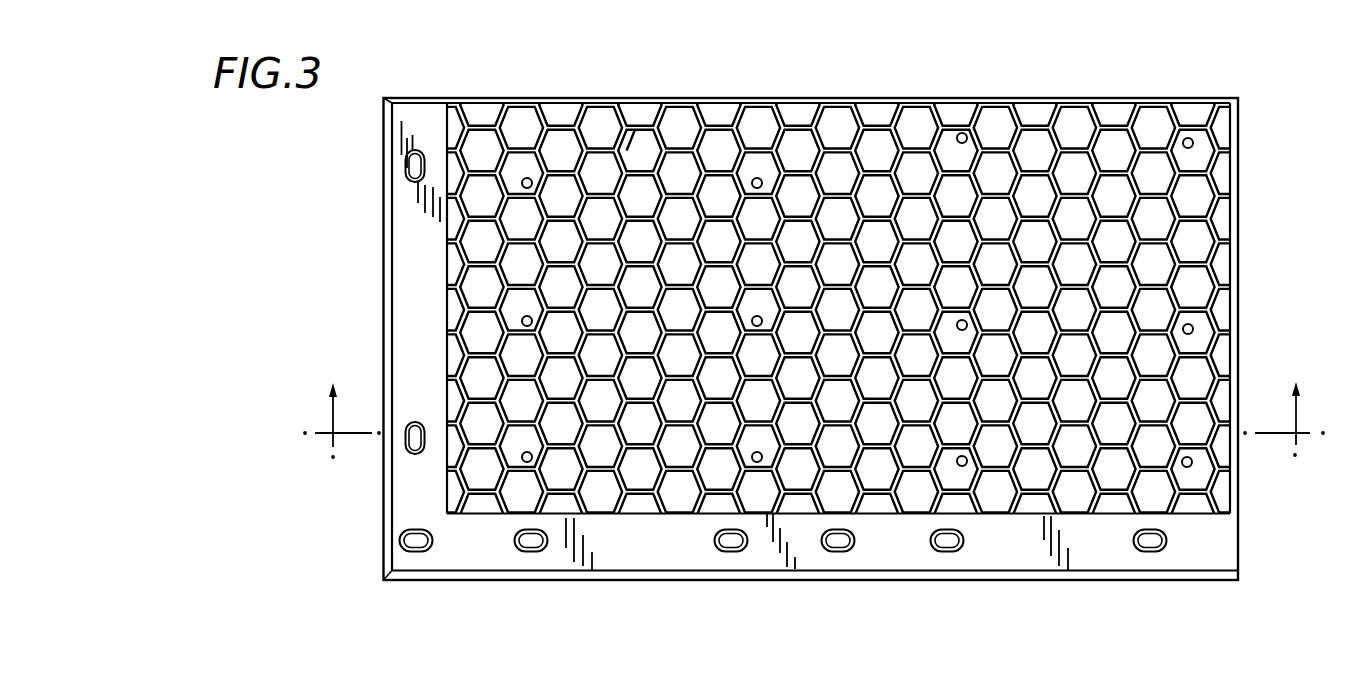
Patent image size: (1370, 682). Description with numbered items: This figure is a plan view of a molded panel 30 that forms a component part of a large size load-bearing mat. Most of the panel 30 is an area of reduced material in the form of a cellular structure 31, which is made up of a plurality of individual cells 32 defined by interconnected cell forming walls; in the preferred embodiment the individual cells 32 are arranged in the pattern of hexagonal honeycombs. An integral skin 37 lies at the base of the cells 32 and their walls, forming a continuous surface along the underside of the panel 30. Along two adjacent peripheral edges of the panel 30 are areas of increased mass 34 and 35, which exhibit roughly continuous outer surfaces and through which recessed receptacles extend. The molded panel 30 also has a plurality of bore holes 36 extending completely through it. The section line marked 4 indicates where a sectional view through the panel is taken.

The molded panel 30 is at (1243, 212).
The cellular structure 31 is at (645, 514).
The individual cells 32 is at (918, 130).
The area of increased mass 34 is at (412, 315).
The area of increased mass 35 is at (893, 118).
The bore holes 36 is at (525, 178).
The integral skin 37 is at (638, 147).
The section line 4- 4 is at (814, 422).